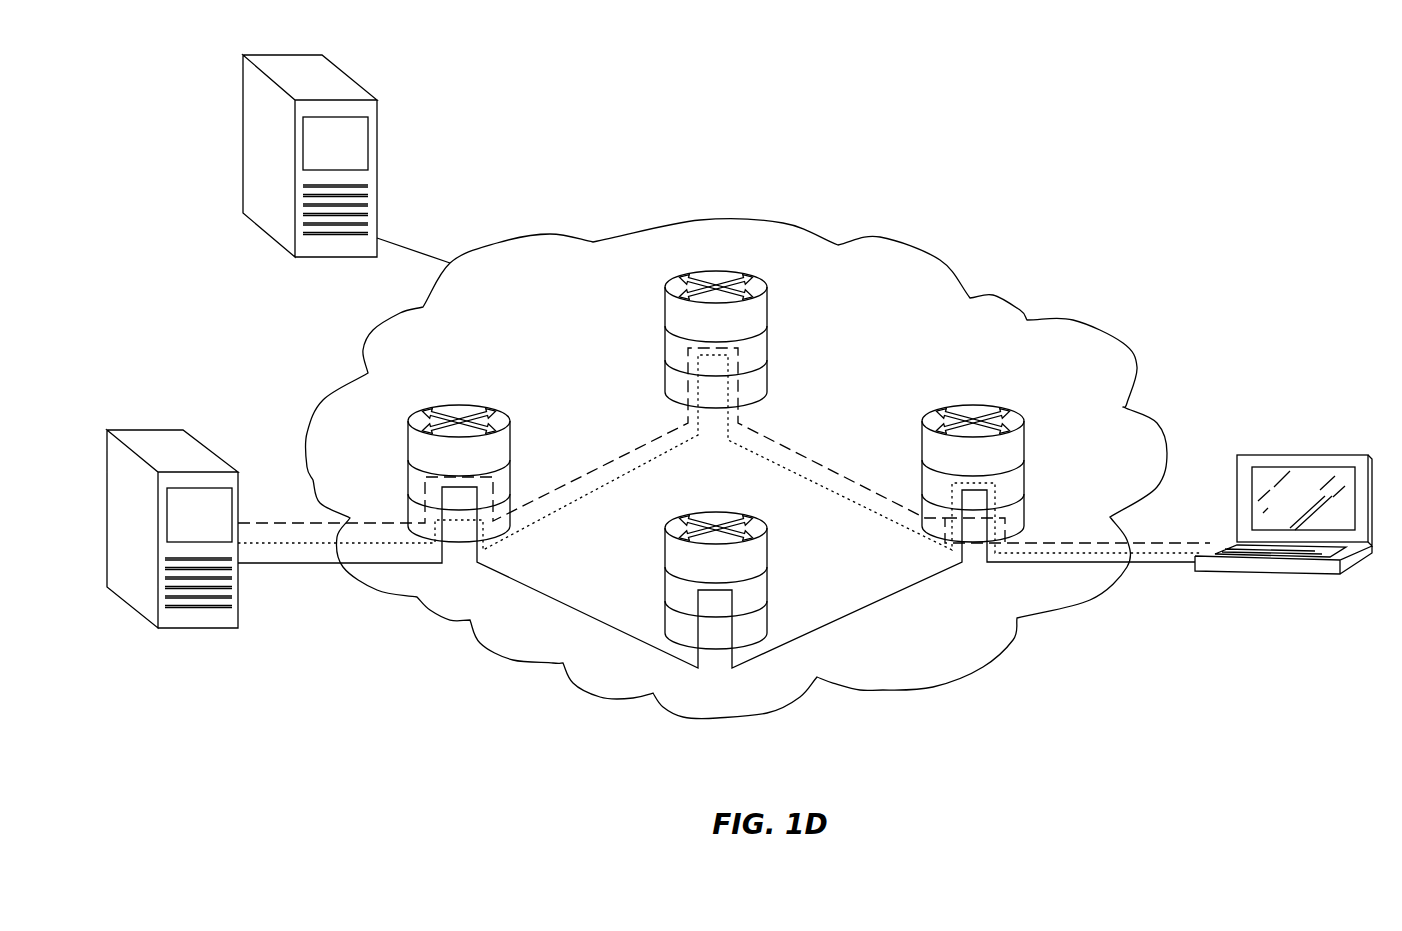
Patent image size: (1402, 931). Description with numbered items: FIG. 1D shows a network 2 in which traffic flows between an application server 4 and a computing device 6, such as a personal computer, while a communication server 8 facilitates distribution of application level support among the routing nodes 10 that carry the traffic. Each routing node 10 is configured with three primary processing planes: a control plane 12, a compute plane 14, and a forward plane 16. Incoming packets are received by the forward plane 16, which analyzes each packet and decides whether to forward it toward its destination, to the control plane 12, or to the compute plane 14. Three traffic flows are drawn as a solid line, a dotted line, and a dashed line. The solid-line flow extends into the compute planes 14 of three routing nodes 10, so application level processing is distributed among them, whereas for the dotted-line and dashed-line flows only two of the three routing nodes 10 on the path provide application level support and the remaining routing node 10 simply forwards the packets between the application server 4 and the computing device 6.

The network 2 is at (907, 228).
The application server 4 is at (172, 430).
The computing device 6 is at (1318, 455).
The communication server 8 is at (311, 56).
The routing node 10 is at (477, 405).
The control plane 12 is at (510, 437).
The compute plane 14 is at (510, 470).
The forward plane 16 is at (408, 503).